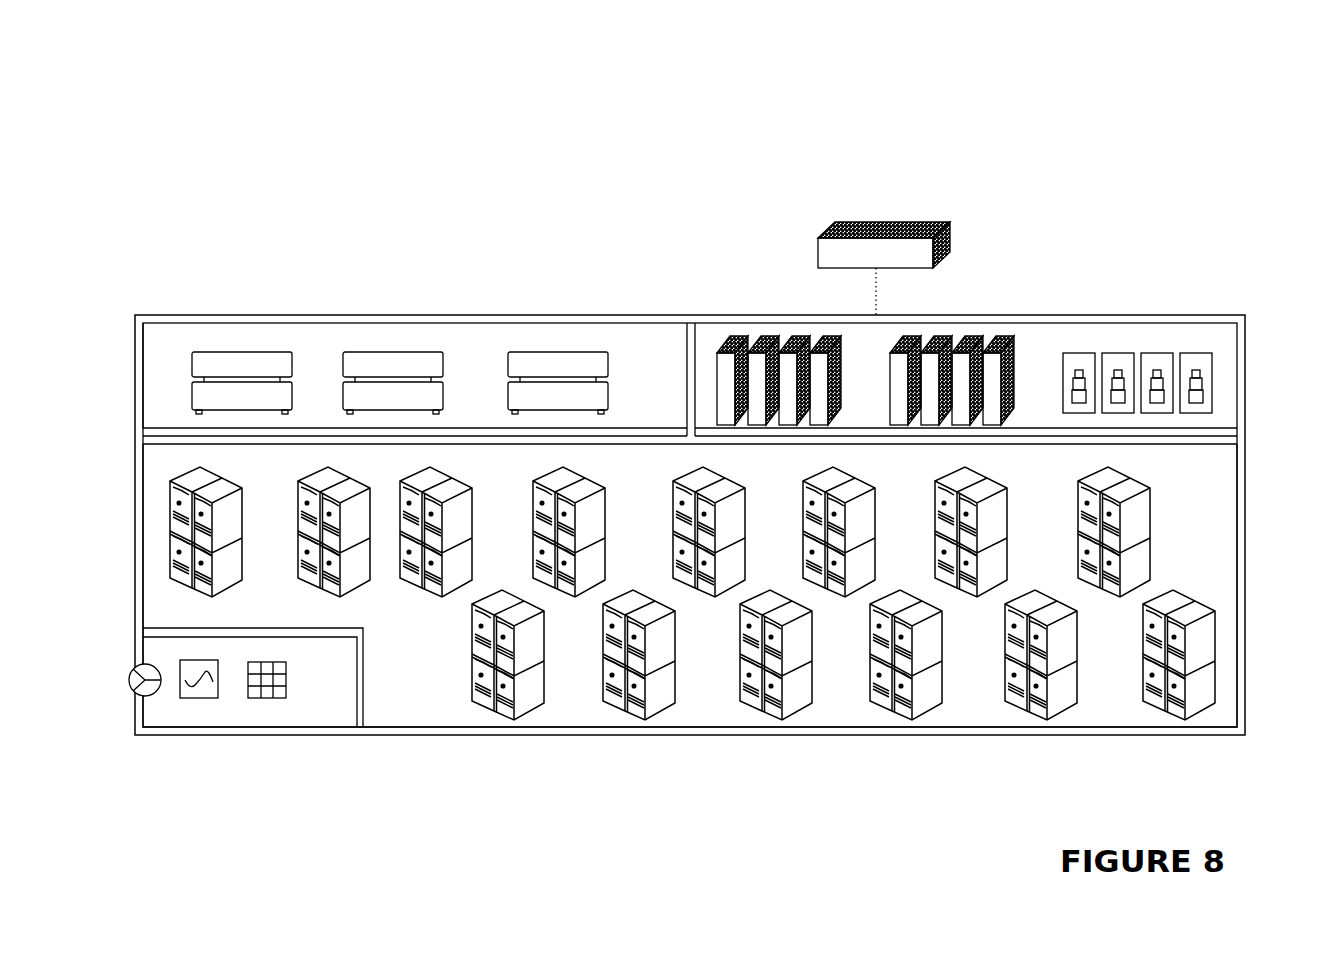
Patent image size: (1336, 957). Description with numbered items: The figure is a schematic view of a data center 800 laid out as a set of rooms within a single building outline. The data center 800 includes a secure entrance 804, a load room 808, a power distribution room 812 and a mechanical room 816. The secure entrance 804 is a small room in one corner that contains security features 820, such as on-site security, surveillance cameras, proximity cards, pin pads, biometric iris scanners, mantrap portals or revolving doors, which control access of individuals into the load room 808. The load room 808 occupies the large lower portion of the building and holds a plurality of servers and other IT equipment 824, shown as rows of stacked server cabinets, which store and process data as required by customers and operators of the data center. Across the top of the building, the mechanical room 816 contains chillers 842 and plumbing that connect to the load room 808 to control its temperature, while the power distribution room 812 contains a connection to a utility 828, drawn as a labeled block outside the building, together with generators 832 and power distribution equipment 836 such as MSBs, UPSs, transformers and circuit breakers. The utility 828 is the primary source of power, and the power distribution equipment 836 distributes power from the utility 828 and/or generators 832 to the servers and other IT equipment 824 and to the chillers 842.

The data center 800 is at (712, 431).
The secure entrance 804 is at (227, 737).
The load room 808 is at (690, 626).
The power distribution room 812 is at (729, 355).
The mechanical room 816 is at (343, 317).
The security features 820 is at (314, 706).
The servers and other IT equipment 824 is at (832, 706).
The utility 828 is at (876, 222).
The generators 832 is at (1196, 340).
The power distribution equipment 836 is at (752, 331).
The chillers 842 is at (402, 342).